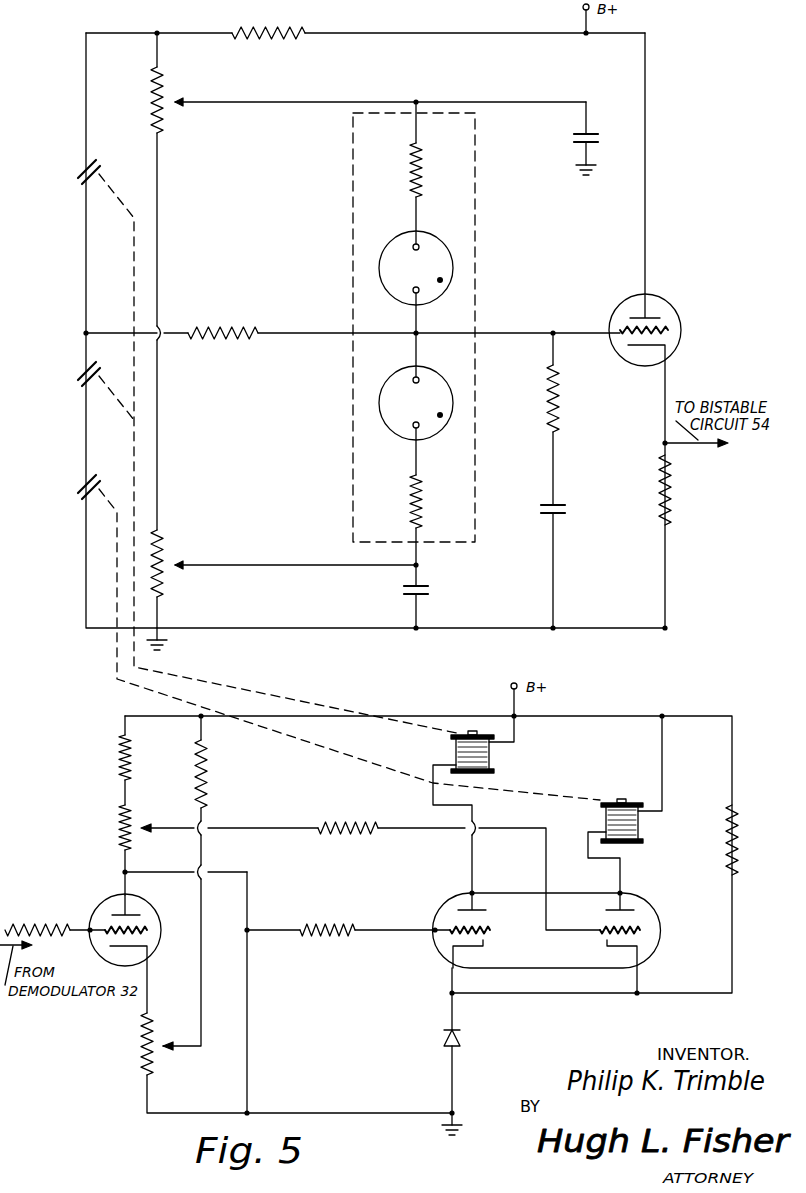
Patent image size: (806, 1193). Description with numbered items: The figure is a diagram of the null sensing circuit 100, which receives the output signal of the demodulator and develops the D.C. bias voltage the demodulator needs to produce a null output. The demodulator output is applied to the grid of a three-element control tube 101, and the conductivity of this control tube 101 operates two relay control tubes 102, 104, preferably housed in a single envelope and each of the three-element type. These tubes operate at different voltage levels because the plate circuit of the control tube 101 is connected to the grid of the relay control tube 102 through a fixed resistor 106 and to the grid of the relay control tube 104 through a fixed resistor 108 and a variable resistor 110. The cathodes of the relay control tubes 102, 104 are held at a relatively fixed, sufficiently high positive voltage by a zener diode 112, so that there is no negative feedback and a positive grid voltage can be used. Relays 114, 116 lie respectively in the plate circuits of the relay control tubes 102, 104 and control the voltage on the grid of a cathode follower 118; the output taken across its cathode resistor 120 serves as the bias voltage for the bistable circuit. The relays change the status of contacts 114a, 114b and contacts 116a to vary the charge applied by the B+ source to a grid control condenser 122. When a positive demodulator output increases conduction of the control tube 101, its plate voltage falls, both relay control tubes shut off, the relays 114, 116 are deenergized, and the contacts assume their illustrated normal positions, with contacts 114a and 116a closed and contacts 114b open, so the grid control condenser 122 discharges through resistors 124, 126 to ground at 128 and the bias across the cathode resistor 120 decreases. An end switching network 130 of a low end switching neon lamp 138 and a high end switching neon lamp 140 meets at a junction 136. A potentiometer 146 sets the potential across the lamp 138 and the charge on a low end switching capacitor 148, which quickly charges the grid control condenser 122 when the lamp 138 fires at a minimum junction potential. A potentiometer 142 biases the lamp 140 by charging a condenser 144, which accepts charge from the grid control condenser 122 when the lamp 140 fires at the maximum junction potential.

The null sensing circuit 100 is at (124, 717).
The control tube 101 is at (103, 905).
The relay control tube 102 is at (466, 970).
The relay control tube 104 is at (646, 962).
The fixed resistor 106 is at (322, 927).
The fixed resistor 108 is at (328, 826).
The variable resistor 110 is at (120, 826).
The zener diode 112 is at (455, 1050).
The relay 114 is at (490, 762).
The contacts 114a is at (83, 370).
The contacts 114b is at (83, 167).
The relay 116 is at (640, 836).
The contacts 116a is at (83, 484).
The cathode follower 118 is at (674, 346).
The cathode resistor 120 is at (672, 492).
The grid control condenser 122 is at (558, 506).
The resistor 124 is at (559, 398).
The resistor 126 is at (233, 328).
The ground 128 is at (168, 648).
The end switching network 130 is at (480, 233).
The junction 136 is at (419, 332).
The low end switching neon lamp 138 is at (432, 242).
The high end switching neon lamp 140 is at (406, 440).
The potentiometer 142 is at (165, 560).
The condenser 144 is at (408, 596).
The potentiometer 146 is at (165, 94).
The low end switching capacitor 148 is at (591, 133).